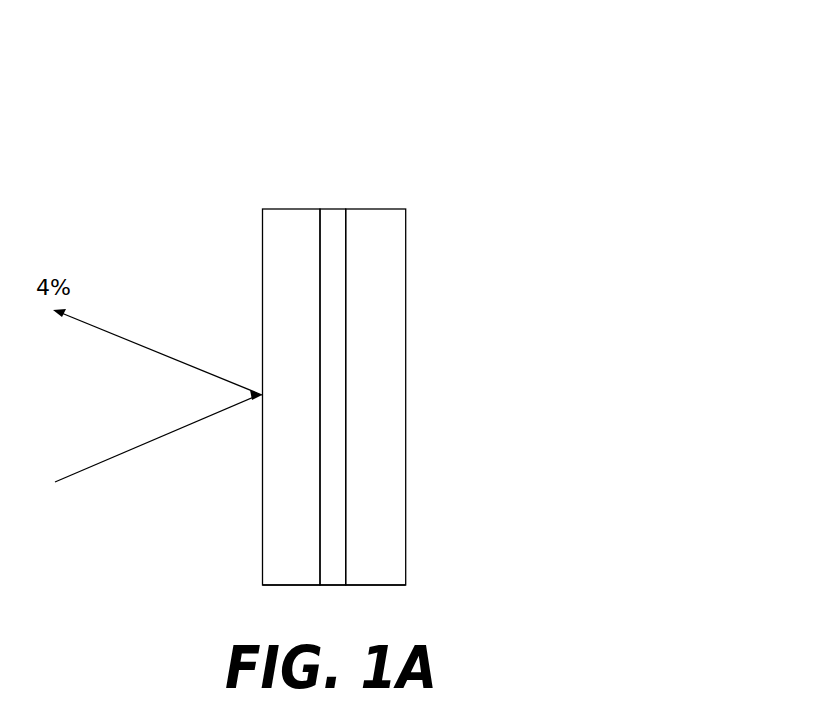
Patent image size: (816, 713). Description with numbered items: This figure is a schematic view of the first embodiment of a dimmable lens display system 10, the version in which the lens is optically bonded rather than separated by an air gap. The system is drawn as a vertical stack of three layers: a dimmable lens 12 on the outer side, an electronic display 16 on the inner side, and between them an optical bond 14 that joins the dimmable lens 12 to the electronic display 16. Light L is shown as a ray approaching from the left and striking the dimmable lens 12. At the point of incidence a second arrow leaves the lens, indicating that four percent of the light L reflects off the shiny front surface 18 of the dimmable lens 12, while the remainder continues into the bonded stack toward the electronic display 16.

The dimmable lens display system 10 is at (455, 50).
The dimmable lens 12 is at (293, 209).
The optical bond 14 is at (334, 209).
The electronic display 16 is at (373, 209).
The shiny front surface 18 is at (261, 533).
The light L is at (150, 443).